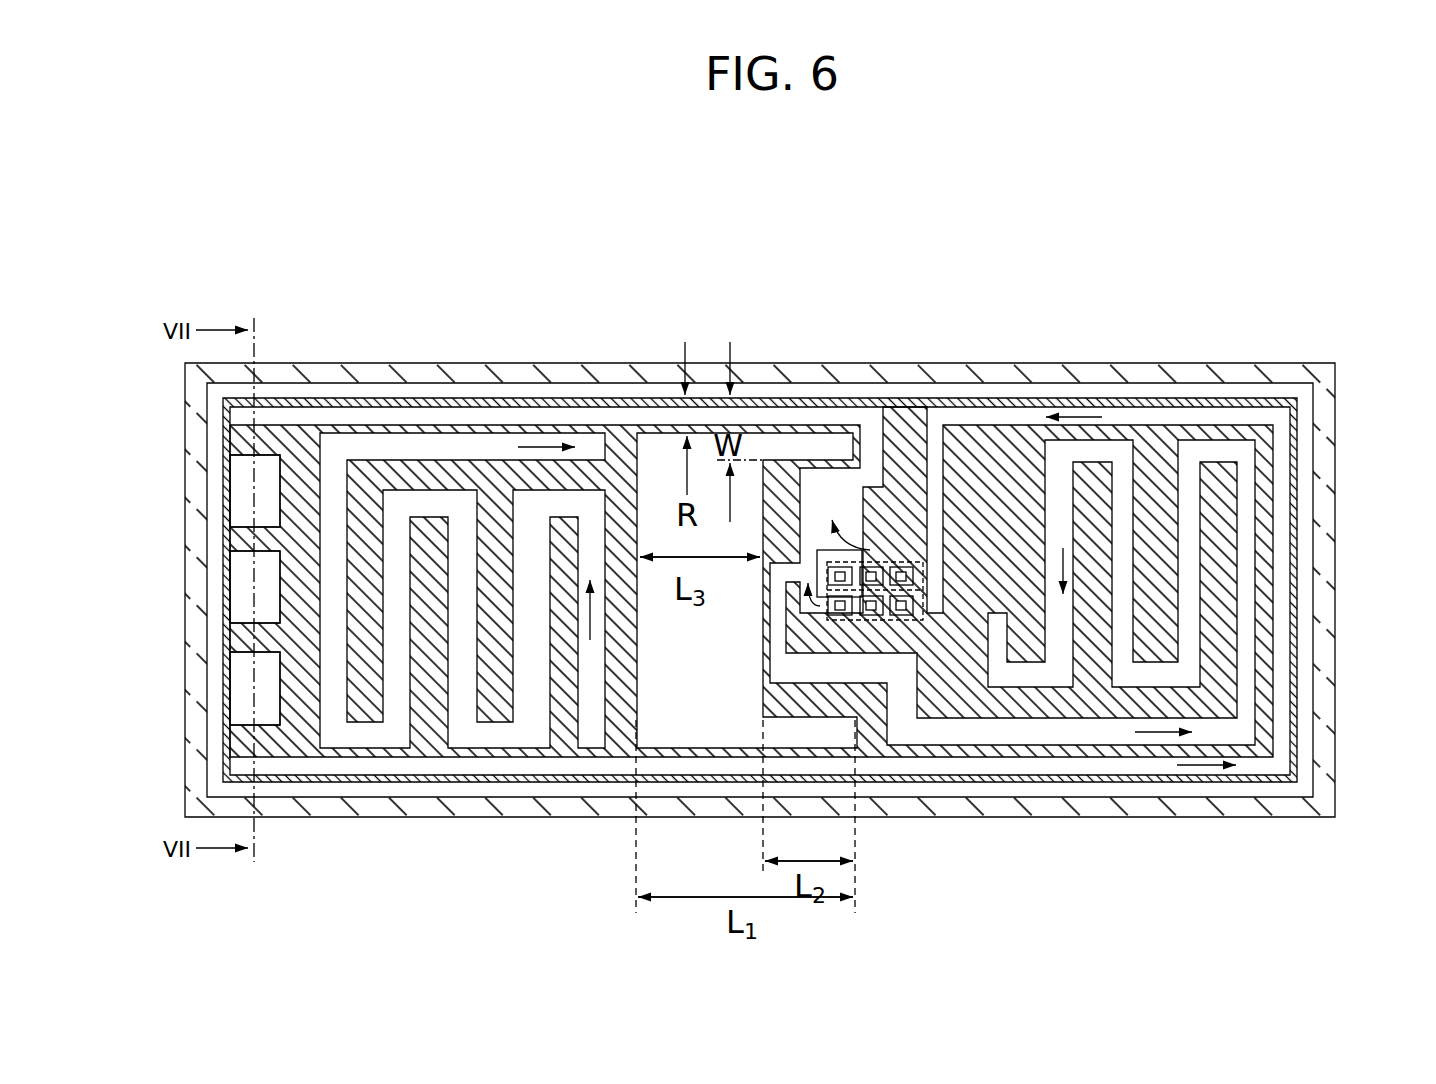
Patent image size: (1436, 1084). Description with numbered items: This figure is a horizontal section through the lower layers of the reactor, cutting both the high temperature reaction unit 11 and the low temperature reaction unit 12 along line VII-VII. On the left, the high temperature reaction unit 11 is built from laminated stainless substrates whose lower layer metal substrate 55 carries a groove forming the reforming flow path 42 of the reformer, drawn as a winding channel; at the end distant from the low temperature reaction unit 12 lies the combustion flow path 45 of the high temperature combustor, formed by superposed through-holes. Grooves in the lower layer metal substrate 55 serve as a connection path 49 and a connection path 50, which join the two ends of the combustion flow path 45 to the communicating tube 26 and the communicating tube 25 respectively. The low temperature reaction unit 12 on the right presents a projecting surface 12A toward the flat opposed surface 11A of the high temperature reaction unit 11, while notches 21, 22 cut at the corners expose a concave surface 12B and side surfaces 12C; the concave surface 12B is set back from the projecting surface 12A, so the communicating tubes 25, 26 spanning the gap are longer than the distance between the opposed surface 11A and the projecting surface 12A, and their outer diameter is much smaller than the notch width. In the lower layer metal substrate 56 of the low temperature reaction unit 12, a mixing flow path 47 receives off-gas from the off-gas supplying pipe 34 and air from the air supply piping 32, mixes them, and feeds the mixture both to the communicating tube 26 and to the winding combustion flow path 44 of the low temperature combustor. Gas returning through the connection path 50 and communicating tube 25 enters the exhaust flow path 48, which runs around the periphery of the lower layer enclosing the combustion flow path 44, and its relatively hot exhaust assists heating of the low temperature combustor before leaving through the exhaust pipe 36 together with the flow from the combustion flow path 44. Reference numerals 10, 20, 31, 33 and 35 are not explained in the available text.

The wireless IC device 10 is at (1176, 279).
The high temperature reaction unit 11 is at (222, 533).
The opposed surface 11A is at (660, 455).
The low temperature reaction unit 12 is at (1294, 620).
The projecting surface 12A is at (763, 630).
The concave surface 12B is at (853, 552).
The side surface 12C is at (833, 482).
The outer case 20 is at (1270, 366).
The notch 21 is at (787, 737).
The notch 22 is at (793, 445).
The communicating tube 25 is at (692, 783).
The communicating tube 26 is at (735, 412).
The first terminal electrode 31 is at (840, 563).
The air supply piping 32 is at (878, 563).
The third terminal electrode 33 is at (902, 565).
The off-gas supplying pipe 34 is at (846, 620).
The fifth terminal electrode 35 is at (880, 622).
The exhaust pipe 36 is at (906, 625).
The reforming flow path 42 is at (388, 447).
The combustion flow path 44 is at (1082, 732).
The combustion flow path 45 is at (243, 483).
The mixing flow path 47 is at (822, 495).
The exhaust flow path 48 is at (1283, 505).
The connection path 49 is at (472, 413).
The connection path 50 is at (410, 767).
The lower layer metal substrate 55 is at (640, 495).
The lower layer metal substrate 56 is at (1220, 592).